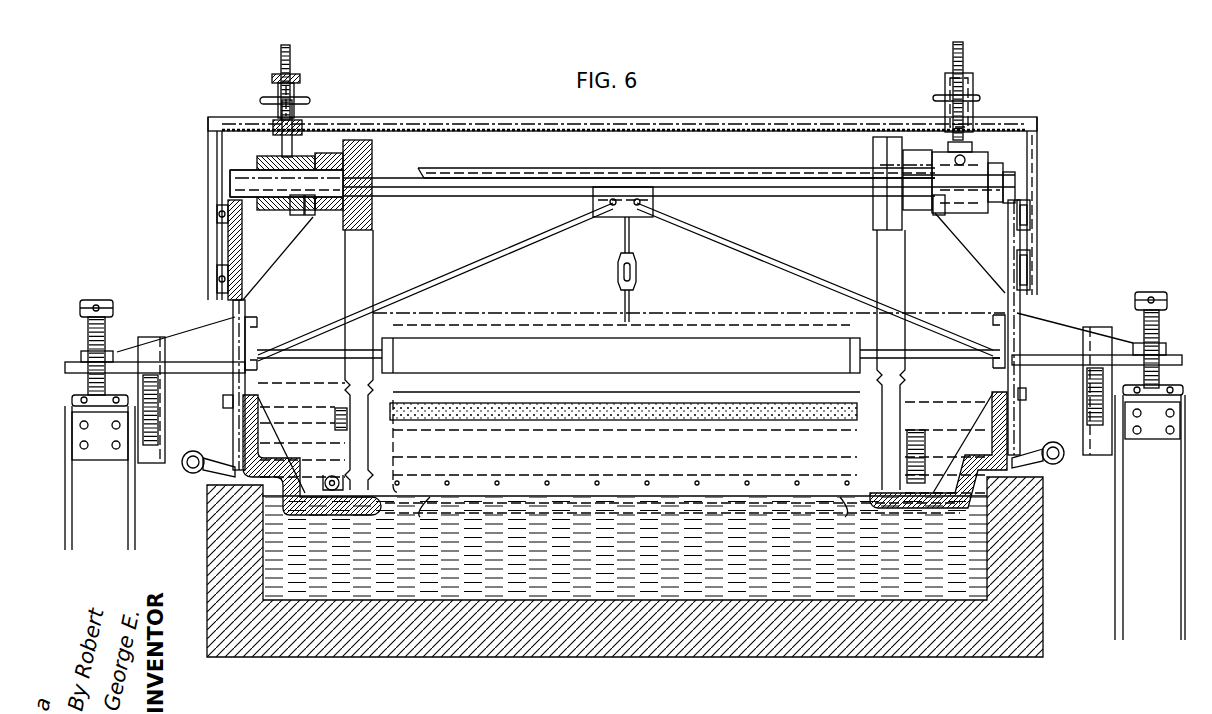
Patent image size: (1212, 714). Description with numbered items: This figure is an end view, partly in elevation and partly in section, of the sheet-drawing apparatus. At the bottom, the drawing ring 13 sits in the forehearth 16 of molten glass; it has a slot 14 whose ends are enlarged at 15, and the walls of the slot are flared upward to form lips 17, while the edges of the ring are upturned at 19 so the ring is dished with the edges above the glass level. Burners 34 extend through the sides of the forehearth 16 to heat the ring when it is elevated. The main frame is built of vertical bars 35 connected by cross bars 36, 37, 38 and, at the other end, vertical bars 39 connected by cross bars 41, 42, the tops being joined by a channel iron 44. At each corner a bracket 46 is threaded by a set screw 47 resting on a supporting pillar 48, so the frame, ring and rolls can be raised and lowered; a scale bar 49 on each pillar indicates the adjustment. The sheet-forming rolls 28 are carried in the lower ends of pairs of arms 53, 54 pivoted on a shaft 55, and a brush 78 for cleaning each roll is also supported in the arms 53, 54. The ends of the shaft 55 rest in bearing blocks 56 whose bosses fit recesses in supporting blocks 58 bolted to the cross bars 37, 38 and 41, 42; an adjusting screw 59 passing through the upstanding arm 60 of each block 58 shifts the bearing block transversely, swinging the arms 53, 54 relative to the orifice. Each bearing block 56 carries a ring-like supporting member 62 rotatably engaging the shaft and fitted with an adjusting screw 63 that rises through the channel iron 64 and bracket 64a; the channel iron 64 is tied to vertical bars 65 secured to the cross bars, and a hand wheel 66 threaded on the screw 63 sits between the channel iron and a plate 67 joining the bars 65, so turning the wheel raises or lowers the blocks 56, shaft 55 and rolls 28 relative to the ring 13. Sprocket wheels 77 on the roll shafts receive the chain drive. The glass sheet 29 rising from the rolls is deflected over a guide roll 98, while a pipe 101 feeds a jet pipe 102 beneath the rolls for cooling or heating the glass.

The drawing ring 13 is at (207, 507).
The slot 14 is at (725, 497).
The enlarged ends of slot 15 is at (398, 507).
The forehearth 16 is at (207, 535).
The lips 17 is at (473, 495).
The upturned edges 19 is at (223, 405).
The sheet-forming rolls 28 is at (357, 442).
The glass sheet 29 is at (512, 336).
The burners 34 is at (190, 474).
The vertical bars 35 is at (245, 380).
The cross bar 36 is at (262, 364).
The cross bar 37 is at (228, 278).
The cross bar 38 is at (228, 213).
The vertical bars 39 is at (1021, 302).
The cross bar 41 is at (1030, 272).
The cross bar 42 is at (1030, 210).
The channel iron 44 is at (698, 176).
The bracket 46 is at (188, 369).
The set screw 47 is at (88, 338).
The supporting pillar 48 is at (82, 470).
The scale bar 49 is at (160, 418).
The arm 53 is at (347, 280).
The arm 54 is at (374, 222).
The shaft 55 is at (540, 172).
The bearing block 56 is at (310, 215).
The supporting block 58 is at (262, 278).
The adjusting screw 59 is at (950, 153).
The upstanding arm 60 is at (268, 160).
The ring-like supporting member 62 is at (292, 215).
The adjusting screw 63 is at (290, 55).
The channel iron 64 is at (530, 110).
The bracket 64a is at (300, 78).
The vertical bars 65 is at (210, 152).
The hand wheel 66 is at (262, 98).
The plate 67 is at (302, 120).
The sprocket wheel 77 is at (922, 440).
The brush 78 is at (595, 408).
The guide roll 98 is at (690, 338).
The pipe 101 is at (327, 472).
The jet pipe 102 is at (625, 478).